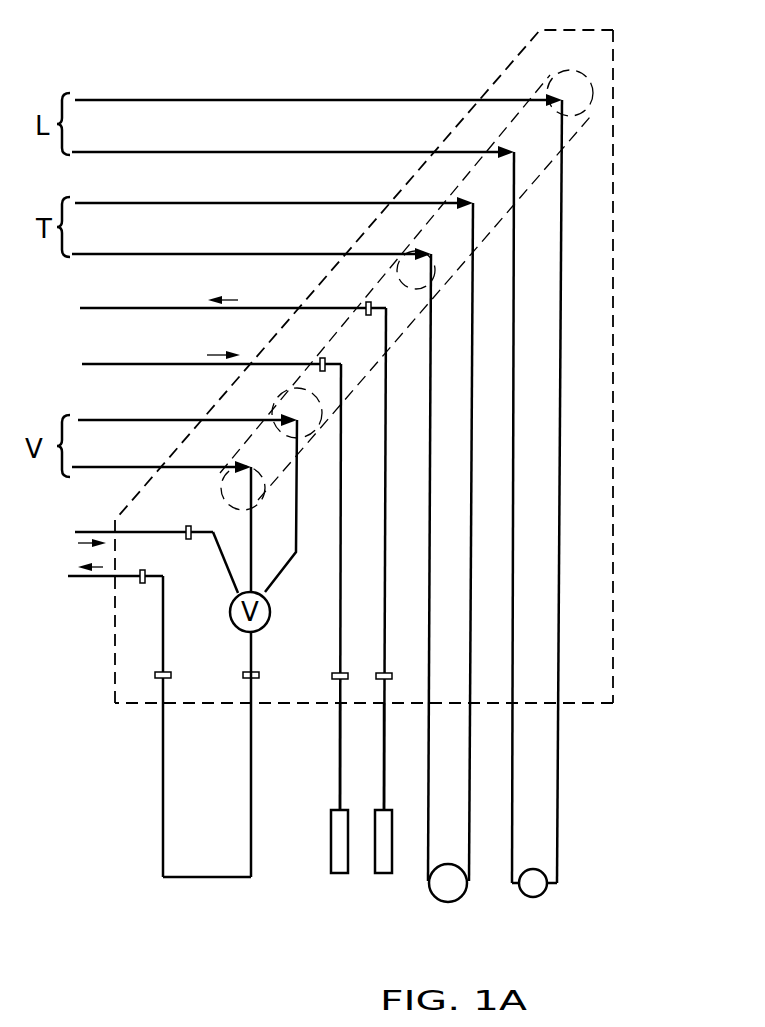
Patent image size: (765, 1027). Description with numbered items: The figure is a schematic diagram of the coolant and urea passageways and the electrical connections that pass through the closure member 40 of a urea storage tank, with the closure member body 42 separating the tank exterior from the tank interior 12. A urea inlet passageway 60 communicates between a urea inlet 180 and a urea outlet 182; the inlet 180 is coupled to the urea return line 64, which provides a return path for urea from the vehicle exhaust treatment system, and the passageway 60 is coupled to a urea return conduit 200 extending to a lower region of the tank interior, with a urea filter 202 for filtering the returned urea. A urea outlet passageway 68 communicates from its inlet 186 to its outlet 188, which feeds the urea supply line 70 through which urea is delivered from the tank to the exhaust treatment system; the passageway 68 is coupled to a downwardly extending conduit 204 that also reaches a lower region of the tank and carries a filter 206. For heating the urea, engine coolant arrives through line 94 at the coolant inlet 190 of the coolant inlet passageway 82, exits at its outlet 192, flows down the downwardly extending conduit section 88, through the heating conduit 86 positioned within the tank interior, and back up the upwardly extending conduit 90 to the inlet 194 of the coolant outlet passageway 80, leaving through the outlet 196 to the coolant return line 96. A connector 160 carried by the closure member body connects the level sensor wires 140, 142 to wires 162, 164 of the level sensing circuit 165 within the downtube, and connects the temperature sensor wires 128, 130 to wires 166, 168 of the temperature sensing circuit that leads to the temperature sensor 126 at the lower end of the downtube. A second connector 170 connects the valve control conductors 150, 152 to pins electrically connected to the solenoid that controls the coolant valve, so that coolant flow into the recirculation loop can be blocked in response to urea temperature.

The tank interior 12 is at (590, 737).
The closure member 40 is at (645, 419).
The closure member body 42 is at (582, 546).
The urea inlet passageway 60 is at (341, 420).
The urea return line 64 is at (188, 362).
The urea outlet passageway 68 is at (384, 347).
The urea supply line 70 is at (200, 306).
The coolant outlet passageway 80 is at (157, 584).
The coolant inlet passageway 82 is at (208, 545).
The heating conduit 86 is at (210, 878).
The downwardly extending conduit section 88 is at (250, 803).
The upwardly extending conduit 90 is at (160, 808).
The coolant supply line 94 is at (100, 531).
The coolant return line 96 is at (100, 577).
The temperature sensor 126 is at (447, 902).
The temperature sensor wire 128 is at (265, 201).
The temperature sensor wire 130 is at (265, 252).
The level sensor wire 140 is at (265, 98).
The level sensor wire 142 is at (265, 150).
The valve control conductor 150 is at (156, 418).
The valve ground conductor 152 is at (147, 465).
The connector 160 is at (584, 112).
The level sensing circuit wire 162 is at (560, 843).
The level sensing circuit wire 164 is at (514, 790).
The level sensing circuit 165 is at (533, 897).
The temperature sensing circuit wire 166 is at (469, 827).
The temperature sensing circuit wire 168 is at (428, 840).
The valve connector 170 is at (218, 482).
The urea inlet 180 is at (320, 358).
The urea outlet 182 is at (332, 676).
The inlet of urea outlet passageway 186 is at (380, 672).
The outlet of urea outlet passageway 188 is at (366, 302).
The coolant inlet 190 is at (188, 540).
The coolant passageway outlet 192 is at (243, 675).
The coolant outlet passageway inlet 194 is at (155, 676).
The coolant outlet 196 is at (142, 584).
The urea return conduit 200 is at (338, 790).
The urea filter 202 is at (335, 848).
The downwardly extending conduit 204 is at (380, 752).
The filter 206 is at (377, 850).